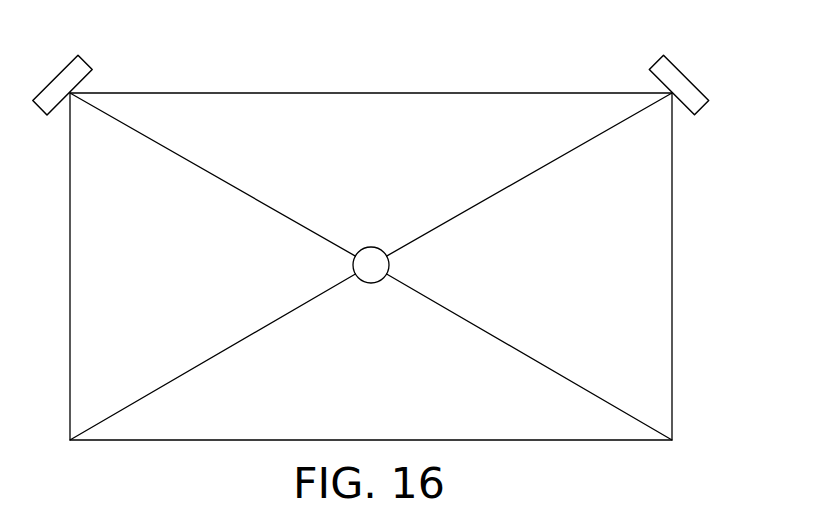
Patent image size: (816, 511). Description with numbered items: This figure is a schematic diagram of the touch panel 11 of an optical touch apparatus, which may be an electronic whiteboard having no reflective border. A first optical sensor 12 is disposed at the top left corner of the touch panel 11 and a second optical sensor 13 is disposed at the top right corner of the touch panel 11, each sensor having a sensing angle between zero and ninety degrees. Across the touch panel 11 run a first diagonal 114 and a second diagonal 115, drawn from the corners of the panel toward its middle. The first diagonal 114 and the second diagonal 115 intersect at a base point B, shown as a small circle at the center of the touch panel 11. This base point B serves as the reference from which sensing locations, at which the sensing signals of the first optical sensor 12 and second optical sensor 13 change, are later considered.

The touch panel 11 is at (373, 92).
The first optical sensor 12 is at (60, 85).
The second optical sensor 13 is at (683, 85).
The first diagonal 114 is at (530, 172).
The second diagonal 115 is at (212, 172).
The base point B is at (372, 283).